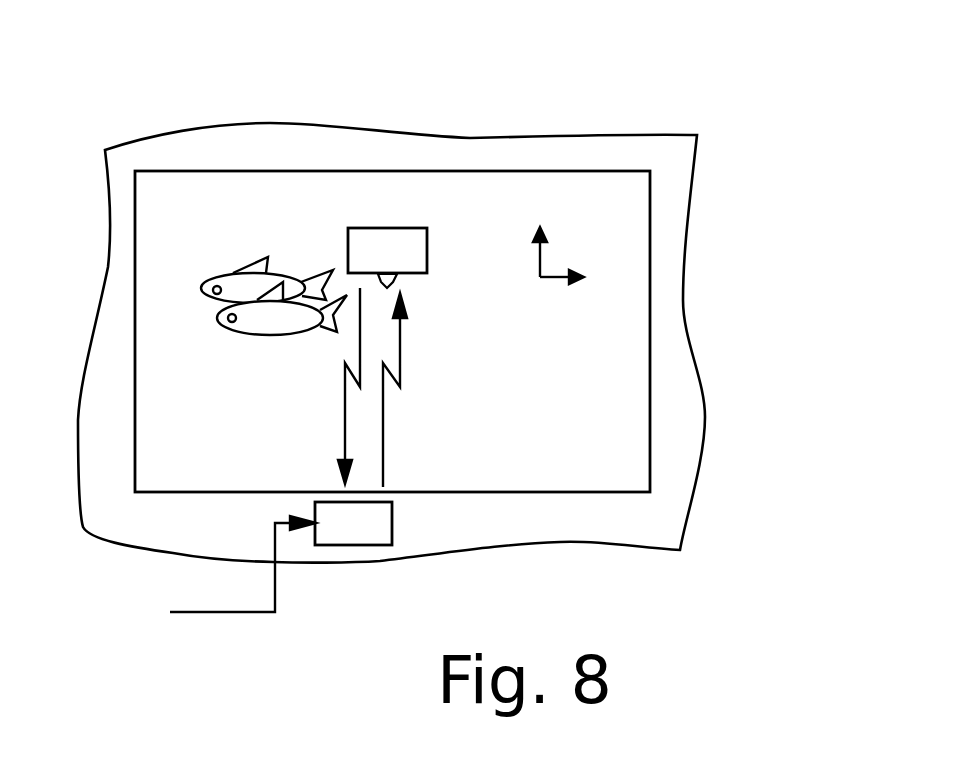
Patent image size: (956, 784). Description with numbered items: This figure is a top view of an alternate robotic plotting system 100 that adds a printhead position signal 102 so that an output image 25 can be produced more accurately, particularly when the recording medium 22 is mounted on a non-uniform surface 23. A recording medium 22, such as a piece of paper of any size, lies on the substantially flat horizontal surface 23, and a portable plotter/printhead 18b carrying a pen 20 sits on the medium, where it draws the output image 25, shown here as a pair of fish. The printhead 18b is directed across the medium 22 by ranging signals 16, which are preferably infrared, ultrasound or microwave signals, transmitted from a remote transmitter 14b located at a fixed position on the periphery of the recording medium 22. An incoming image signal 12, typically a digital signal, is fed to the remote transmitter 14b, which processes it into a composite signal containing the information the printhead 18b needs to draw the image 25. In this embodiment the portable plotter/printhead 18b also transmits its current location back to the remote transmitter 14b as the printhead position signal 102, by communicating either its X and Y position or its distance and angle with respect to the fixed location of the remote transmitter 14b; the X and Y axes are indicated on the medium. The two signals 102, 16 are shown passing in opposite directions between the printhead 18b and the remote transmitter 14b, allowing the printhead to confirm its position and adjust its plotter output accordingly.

The alternate robotic plotting system 100 is at (669, 122).
The surface 23 is at (685, 257).
The recording medium 22 is at (649, 398).
The output image 25 is at (213, 265).
The portable plotter/printhead 18b is at (348, 247).
The pen 20 is at (398, 288).
The printhead position signal 102 is at (345, 407).
The ranging signals 16 is at (401, 365).
The remote transmitter 14b is at (392, 538).
The incoming image signal 12 is at (275, 587).